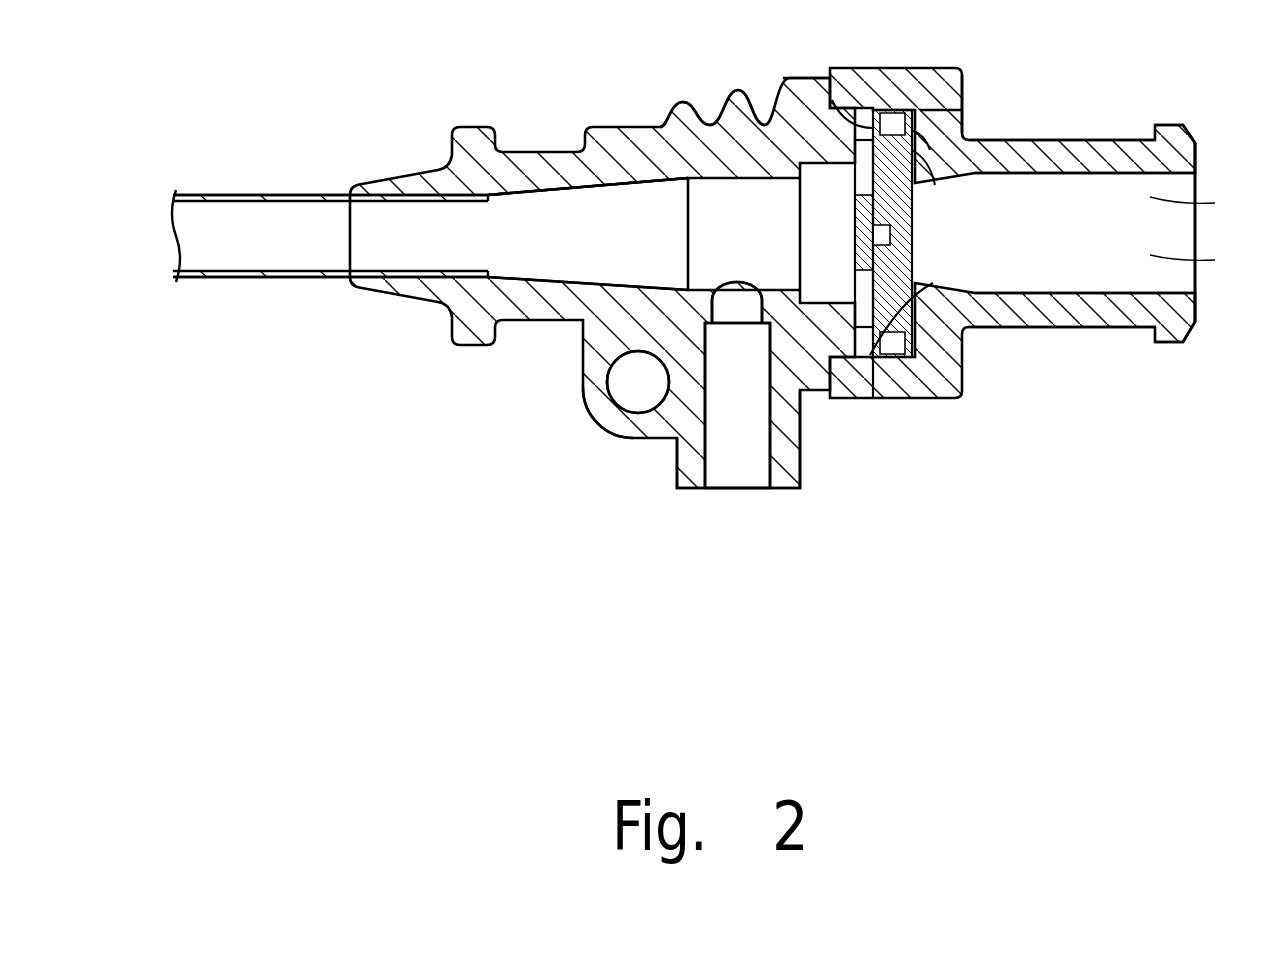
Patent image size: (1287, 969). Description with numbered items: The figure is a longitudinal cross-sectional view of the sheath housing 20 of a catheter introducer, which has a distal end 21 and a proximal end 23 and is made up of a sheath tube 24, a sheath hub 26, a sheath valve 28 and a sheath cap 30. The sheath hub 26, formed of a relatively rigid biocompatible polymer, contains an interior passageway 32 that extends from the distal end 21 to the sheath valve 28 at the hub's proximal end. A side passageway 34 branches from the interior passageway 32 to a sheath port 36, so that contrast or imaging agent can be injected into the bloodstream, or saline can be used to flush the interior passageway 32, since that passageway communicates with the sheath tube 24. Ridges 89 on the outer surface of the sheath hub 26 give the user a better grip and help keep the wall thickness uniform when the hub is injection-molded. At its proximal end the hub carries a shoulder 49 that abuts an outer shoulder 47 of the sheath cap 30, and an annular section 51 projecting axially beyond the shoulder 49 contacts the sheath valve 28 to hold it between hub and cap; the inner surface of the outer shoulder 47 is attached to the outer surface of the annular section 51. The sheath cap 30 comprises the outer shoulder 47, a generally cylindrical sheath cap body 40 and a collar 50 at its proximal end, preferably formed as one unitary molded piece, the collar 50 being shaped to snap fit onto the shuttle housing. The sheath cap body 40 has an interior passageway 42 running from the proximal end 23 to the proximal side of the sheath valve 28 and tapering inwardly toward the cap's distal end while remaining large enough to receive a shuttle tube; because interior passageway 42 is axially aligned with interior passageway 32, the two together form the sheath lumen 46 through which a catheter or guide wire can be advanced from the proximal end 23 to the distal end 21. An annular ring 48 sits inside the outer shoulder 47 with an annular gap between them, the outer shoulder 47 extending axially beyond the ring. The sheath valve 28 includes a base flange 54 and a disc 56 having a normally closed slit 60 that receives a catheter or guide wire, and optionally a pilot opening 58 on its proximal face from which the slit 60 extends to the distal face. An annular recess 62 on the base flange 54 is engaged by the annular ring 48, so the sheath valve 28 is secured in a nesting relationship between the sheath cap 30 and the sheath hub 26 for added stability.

The sheath housing 20 is at (622, 555).
The distal end 21 is at (177, 161).
The proximal end 23 is at (1221, 88).
The sheath tube 24 is at (270, 292).
The sheath hub 26 is at (577, 421).
The sheath valve 28 is at (857, 358).
The sheath cap 30 is at (1075, 345).
The interior passageway 32 is at (578, 237).
The side passageway 34 is at (730, 413).
The sheath port 36 is at (756, 505).
The sheath cap body 40 is at (1000, 140).
The interior passageway 42 is at (1112, 233).
The sheath lumen 46 is at (532, 233).
The outer shoulder 47 is at (905, 68).
The annular ring 48 is at (932, 112).
The shoulder 49 is at (800, 78).
The collar 50 is at (1170, 344).
The annular section 51 is at (836, 100).
The base flange 54 is at (915, 147).
The disc 56 is at (852, 225).
The pilot opening 58 is at (885, 234).
The slit 60 is at (865, 242).
The annular recess 62 is at (933, 283).
The ridges 89 is at (683, 100).